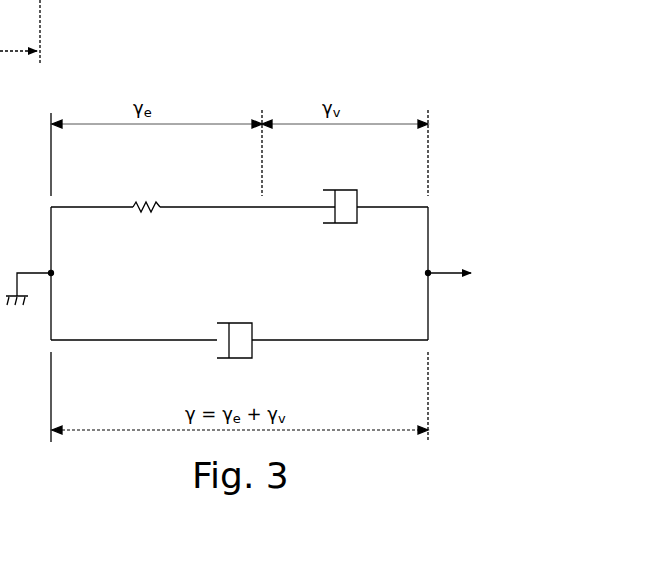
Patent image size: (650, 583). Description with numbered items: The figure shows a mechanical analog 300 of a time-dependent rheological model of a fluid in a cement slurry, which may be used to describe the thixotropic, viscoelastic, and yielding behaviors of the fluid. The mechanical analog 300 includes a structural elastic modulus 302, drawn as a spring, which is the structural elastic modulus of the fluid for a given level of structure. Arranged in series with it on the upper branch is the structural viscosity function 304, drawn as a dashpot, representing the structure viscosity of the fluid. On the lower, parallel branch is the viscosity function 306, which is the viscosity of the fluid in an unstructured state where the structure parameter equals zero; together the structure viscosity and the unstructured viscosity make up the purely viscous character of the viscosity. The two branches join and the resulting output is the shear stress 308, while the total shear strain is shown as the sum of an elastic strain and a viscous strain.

The mechanical analog 300 is at (313, 66).
The structural elastic modulus 302 is at (145, 200).
The structural viscosity function 304 is at (346, 189).
The viscosity function 306 is at (243, 321).
The shear stress 308 is at (486, 251).